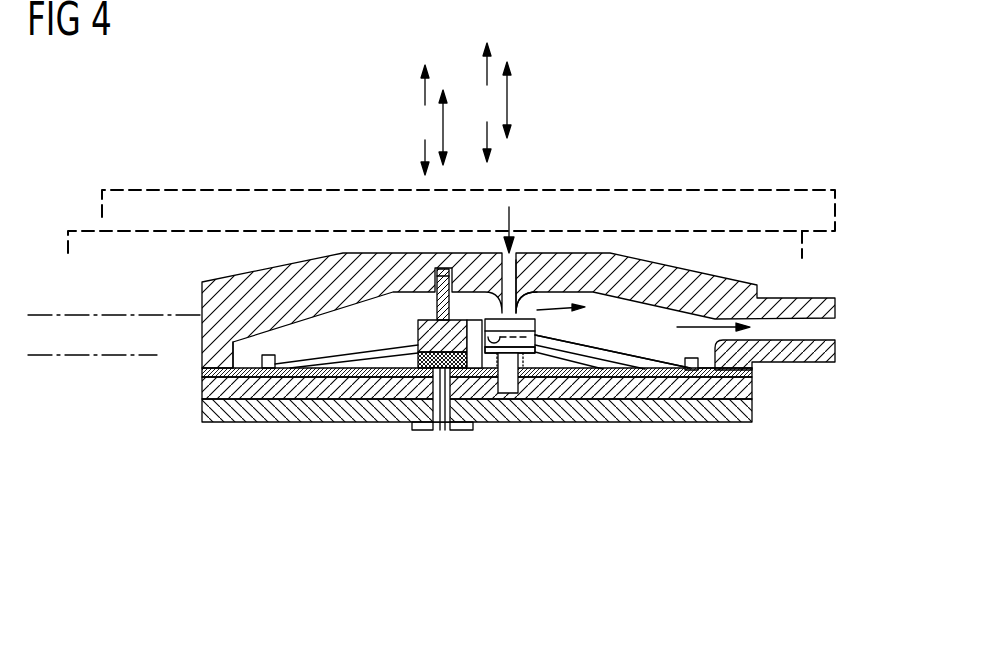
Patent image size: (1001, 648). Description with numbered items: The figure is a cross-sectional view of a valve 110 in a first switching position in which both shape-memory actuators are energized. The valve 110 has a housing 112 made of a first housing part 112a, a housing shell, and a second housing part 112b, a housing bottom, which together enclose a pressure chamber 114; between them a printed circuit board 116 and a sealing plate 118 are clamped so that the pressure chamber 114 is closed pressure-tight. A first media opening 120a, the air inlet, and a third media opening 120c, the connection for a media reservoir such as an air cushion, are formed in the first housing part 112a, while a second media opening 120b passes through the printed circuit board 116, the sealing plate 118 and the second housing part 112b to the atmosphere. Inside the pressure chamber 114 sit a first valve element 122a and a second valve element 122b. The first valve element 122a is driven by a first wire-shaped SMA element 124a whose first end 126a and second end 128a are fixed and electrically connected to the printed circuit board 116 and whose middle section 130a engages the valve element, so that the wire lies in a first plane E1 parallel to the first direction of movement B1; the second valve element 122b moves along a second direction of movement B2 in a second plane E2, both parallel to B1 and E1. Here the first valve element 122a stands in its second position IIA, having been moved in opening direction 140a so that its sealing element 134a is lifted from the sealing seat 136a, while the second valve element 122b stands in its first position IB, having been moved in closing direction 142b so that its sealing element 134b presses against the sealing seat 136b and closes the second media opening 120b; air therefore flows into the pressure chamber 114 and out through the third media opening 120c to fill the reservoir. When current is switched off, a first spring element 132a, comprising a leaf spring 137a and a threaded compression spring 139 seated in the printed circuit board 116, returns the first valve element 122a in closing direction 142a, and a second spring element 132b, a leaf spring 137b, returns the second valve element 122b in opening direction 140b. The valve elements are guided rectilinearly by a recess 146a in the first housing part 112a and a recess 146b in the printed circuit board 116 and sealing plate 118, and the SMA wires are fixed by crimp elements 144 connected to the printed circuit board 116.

The valve 110 is at (705, 163).
The housing 112 is at (195, 366).
The first housing part 112a is at (313, 302).
The second housing part 112b is at (212, 422).
The pressure chamber 114 is at (268, 340).
The printed circuit board 116 is at (202, 388).
The sealing plate 118 is at (202, 373).
The first media opening 120a is at (517, 290).
The second media opening 120b is at (443, 430).
The third media opening 120c is at (835, 340).
The first valve element 122a is at (538, 375).
The second valve element 122b is at (420, 322).
The first wire-shaped SMA element 124a is at (643, 283).
The first end of first SMA element 126a is at (278, 372).
The second end of first SMA element 128a is at (717, 372).
The middle section of first SMA element 130a is at (501, 290).
The first spring element 132a is at (612, 403).
The second spring element 132b is at (339, 427).
The sealing element of first valve element 134a is at (632, 350).
The sealing element of second valve element 134b is at (467, 423).
The sealing seat 136a is at (537, 322).
The sealing seat 136b is at (433, 427).
The leaf spring 137a is at (630, 370).
The second membrane 137b is at (345, 352).
The threaded compression spring 139 is at (537, 422).
The opening direction 140a is at (487, 137).
The opening direction 140b is at (425, 95).
The closing direction 142a is at (487, 68).
The closing direction 142b is at (425, 150).
The crimp element 144 is at (280, 352).
The recess 146a is at (503, 393).
The recess 146b is at (443, 269).
The first direction of movement B1 is at (507, 102).
The second direction of movement B2 is at (443, 125).
The first plane E1 is at (153, 190).
The second plane E2 is at (88, 230).
The second position of first valve element IIA is at (55, 315).
The first position of second valve element IB is at (57, 355).